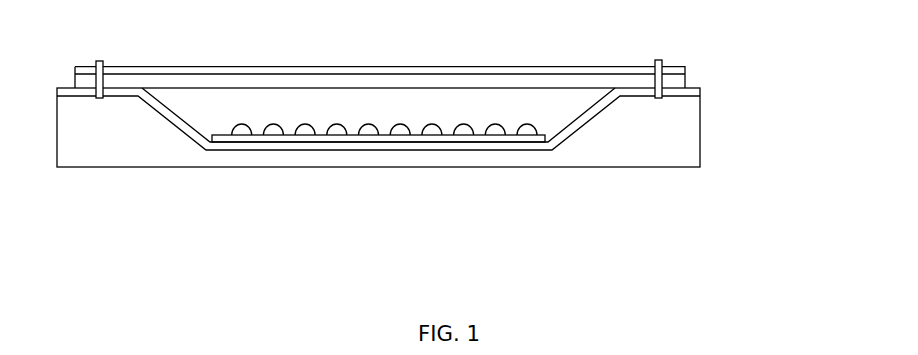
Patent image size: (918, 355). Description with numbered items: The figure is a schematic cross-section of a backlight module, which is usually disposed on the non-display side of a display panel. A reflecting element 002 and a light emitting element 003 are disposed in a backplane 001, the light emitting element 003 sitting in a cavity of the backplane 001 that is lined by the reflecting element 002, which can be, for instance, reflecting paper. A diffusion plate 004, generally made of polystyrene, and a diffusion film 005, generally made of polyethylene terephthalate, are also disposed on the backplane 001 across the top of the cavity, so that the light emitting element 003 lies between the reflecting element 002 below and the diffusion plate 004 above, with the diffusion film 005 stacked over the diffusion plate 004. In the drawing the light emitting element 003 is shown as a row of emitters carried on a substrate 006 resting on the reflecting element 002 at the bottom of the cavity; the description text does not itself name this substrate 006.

The backplane 001 is at (393, 151).
The reflecting element 002 is at (430, 133).
The light emitting element 003 is at (384, 180).
The diffusion plate 004 is at (396, 53).
The diffusion film 005 is at (380, 41).
The light source substrate 006 is at (378, 189).